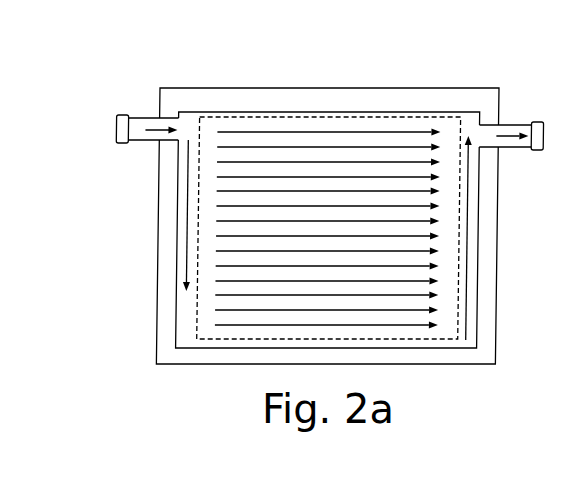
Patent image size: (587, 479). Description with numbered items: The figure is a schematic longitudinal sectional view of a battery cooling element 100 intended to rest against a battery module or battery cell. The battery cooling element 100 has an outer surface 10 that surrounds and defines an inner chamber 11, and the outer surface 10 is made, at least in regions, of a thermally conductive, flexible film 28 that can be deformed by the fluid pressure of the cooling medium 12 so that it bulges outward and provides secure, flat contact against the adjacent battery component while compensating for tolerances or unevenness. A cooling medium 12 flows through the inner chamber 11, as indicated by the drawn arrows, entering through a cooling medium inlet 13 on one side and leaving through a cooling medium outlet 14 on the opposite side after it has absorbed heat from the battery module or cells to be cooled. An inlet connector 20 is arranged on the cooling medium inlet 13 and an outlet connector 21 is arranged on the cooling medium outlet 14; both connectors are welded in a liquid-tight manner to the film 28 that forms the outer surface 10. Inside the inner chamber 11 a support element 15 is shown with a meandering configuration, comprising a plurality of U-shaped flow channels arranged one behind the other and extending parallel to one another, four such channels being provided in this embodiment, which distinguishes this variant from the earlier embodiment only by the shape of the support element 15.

The battery cooling element 100 is at (432, 74).
The outer surface 10 is at (284, 94).
The thermally conductive, flexible film 28 is at (329, 180).
The inlet connector 20 is at (140, 122).
The cooling medium inlet 13 is at (182, 133).
The cooling medium outlet 14 is at (481, 125).
The outlet connector 21 is at (518, 150).
The support element 15 is at (195, 325).
The cooling medium 12 is at (372, 270).
The inner chamber 11 is at (212, 277).